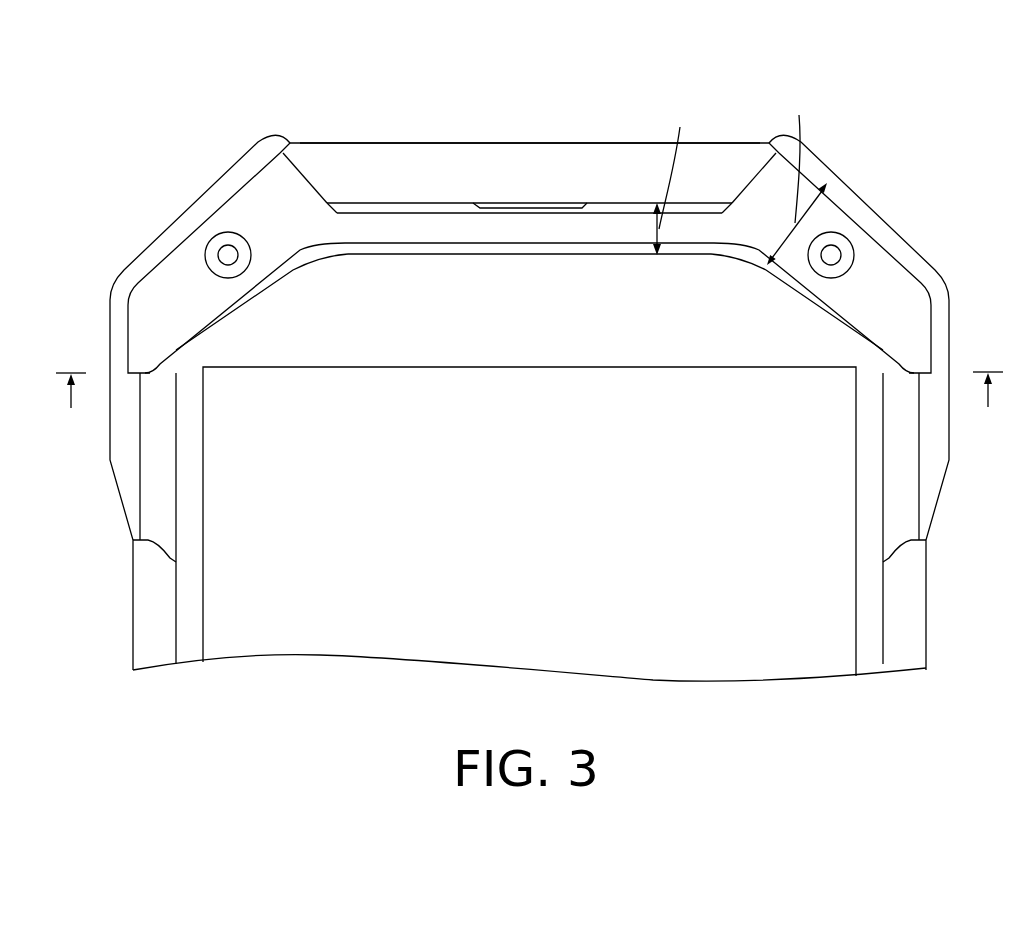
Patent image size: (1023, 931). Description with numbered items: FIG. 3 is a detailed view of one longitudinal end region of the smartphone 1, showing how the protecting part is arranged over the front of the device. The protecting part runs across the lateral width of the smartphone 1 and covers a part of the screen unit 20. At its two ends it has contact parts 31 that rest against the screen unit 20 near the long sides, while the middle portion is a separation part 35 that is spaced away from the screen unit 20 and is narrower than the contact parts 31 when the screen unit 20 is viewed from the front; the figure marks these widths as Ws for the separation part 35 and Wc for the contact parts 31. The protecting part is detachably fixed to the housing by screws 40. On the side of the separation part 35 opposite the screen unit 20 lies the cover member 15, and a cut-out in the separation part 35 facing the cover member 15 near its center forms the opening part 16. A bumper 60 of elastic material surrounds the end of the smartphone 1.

The smartphone 1 is at (300, 100).
The cover member 15 is at (395, 157).
The opening part 16 is at (524, 192).
The screen unit 20 is at (828, 607).
The contact part 31 is at (172, 277).
The separation part 35 is at (597, 223).
The screw 40 is at (228, 232).
The bumper 60 is at (110, 297).